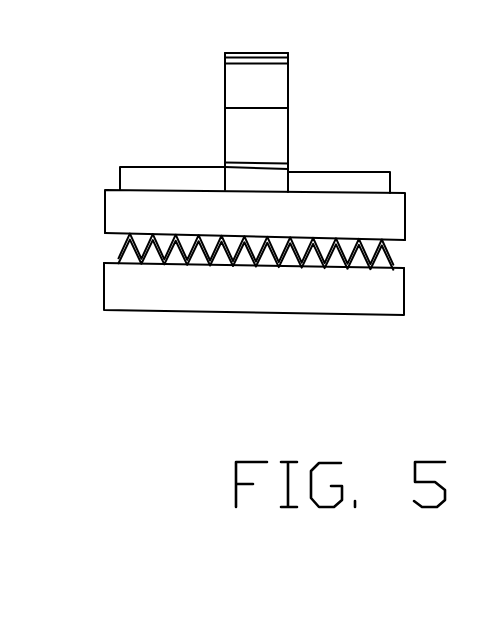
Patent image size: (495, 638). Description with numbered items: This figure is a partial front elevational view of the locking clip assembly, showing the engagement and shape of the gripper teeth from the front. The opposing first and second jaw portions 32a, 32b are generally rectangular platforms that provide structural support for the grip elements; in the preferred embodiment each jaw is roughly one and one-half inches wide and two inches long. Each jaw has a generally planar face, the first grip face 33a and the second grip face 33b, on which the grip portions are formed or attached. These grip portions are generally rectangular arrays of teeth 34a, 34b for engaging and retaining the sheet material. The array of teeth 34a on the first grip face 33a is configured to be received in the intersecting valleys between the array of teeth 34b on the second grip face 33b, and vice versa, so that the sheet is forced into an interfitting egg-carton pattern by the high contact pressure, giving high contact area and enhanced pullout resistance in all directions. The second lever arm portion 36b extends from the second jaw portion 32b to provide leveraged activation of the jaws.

The first jaw portion 32a is at (152, 217).
The second jaw portion 32b is at (275, 295).
The first grip face 33a is at (110, 237).
The second grip face 33b is at (400, 268).
The first grip element 34a is at (345, 242).
The second grip element 34b is at (197, 258).
The second lever arm portion 36b is at (268, 138).